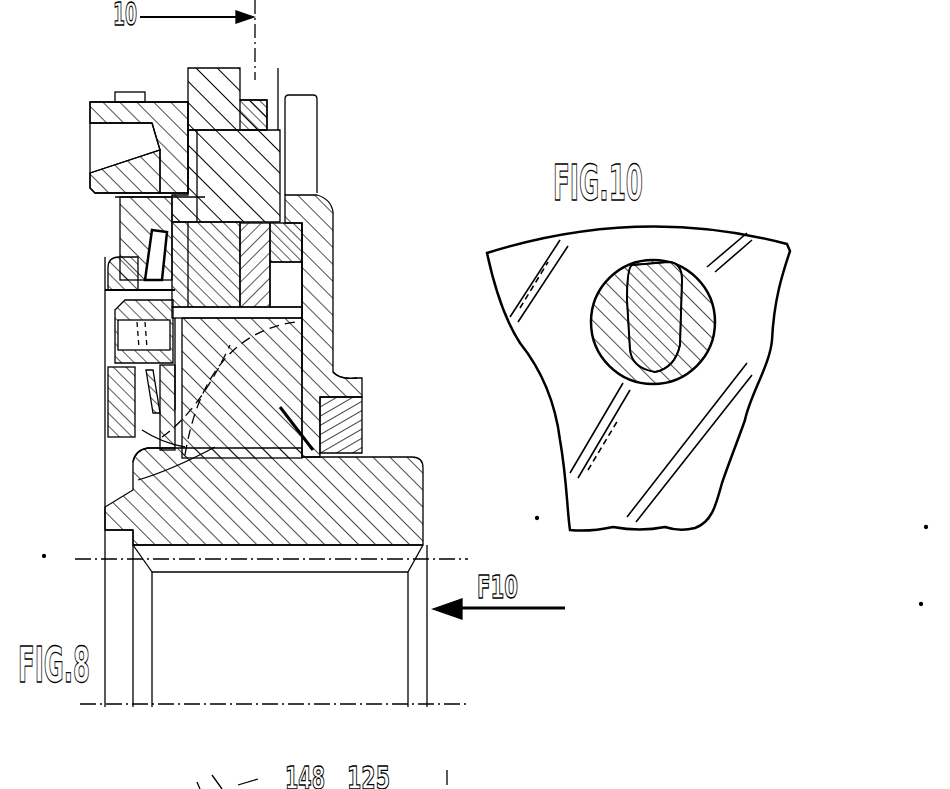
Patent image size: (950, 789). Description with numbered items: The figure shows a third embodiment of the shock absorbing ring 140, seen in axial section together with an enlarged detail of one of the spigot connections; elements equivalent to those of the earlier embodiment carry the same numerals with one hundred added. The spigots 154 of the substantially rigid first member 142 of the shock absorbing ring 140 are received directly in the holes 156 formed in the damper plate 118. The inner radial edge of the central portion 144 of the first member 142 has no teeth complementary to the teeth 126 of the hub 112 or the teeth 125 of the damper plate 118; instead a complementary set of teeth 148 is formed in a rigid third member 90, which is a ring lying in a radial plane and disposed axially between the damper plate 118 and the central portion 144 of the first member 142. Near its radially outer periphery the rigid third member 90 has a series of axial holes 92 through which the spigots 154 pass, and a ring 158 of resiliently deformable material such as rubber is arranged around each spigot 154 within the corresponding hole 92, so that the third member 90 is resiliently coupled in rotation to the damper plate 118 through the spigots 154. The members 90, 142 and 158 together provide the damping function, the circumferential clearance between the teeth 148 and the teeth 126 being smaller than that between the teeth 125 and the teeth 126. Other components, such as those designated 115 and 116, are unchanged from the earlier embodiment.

In FIG. 8, the rigid third member 90 is at (282, 279).
In FIG. 10, the rigid third member 90 is at (713, 413).
In FIG. 8, the axial holes 92 is at (138, 289).
In FIG. 8, the hub 112 is at (370, 503).
In FIG. 8, the bearing sleeve 115 is at (120, 392).
In FIG. 8, the shoulder 116 is at (335, 373).
In FIG. 8, the damper plate 118 is at (152, 278).
In FIG. 8, the teeth of the damper plate 125 is at (132, 482).
In FIG. 8, the teeth of the hub 126 is at (162, 437).
In FIG. 8, the shock absorbing ring 140 is at (298, 163).
In FIG. 8, the rigid first member 142 is at (296, 217).
In FIG. 8, the central portion 144 is at (285, 367).
In FIG. 8, the complementary set of teeth 148 is at (313, 430).
In FIG. 8, the spigots 154 is at (168, 157).
In FIG. 10, the spigots 154 is at (667, 265).
In FIG. 8, the holes 156 is at (210, 150).
In FIG. 10, the ring 158 is at (702, 332).